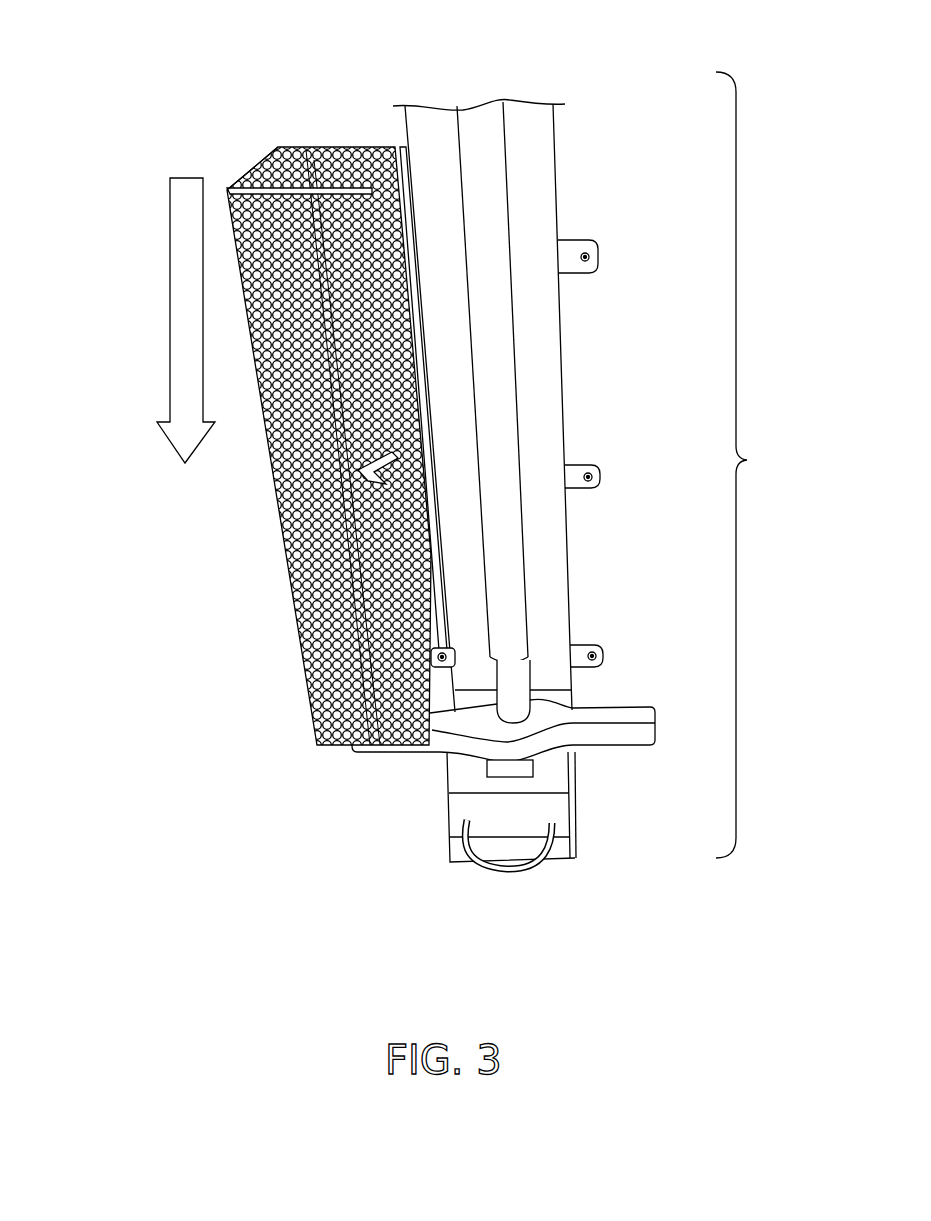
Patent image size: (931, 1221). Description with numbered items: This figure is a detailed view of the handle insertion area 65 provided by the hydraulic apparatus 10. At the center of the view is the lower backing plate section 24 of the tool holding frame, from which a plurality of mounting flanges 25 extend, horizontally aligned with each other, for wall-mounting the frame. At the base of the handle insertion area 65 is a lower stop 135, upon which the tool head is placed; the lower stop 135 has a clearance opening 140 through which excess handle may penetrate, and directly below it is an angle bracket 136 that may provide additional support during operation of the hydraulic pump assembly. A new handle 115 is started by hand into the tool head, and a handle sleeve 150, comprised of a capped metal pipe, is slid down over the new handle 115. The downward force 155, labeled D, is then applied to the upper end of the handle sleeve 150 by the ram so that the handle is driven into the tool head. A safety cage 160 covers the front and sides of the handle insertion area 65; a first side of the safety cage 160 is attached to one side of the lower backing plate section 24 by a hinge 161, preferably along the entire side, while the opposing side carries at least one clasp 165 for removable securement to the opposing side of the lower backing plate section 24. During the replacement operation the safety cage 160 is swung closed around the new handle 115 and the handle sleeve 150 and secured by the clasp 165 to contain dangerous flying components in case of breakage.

The hydraulic apparatus 10 is at (232, 64).
The lower backing plate section 24 is at (548, 193).
The mounting flanges 25 is at (600, 254).
The handle insertion area 65 is at (749, 465).
The new handle 115 is at (513, 685).
The lower stop 135 is at (548, 776).
The angle bracket 136 is at (573, 855).
The clearance opening 140 is at (507, 768).
The handle sleeve 150 is at (488, 357).
The downward force 155 is at (170, 357).
The safety cage 160 is at (312, 573).
The hinge 161 is at (405, 150).
The clasp 165 is at (358, 469).